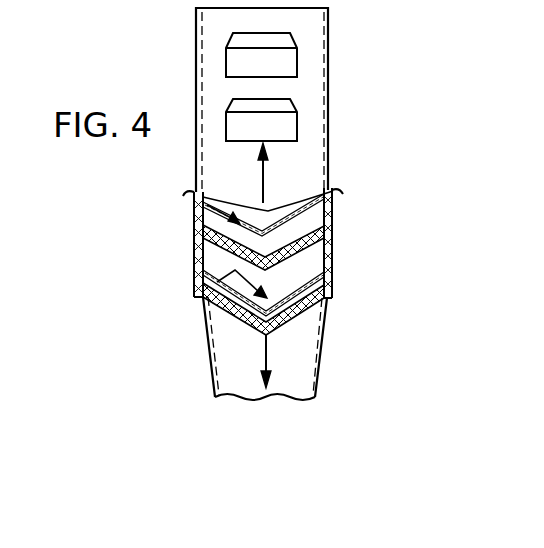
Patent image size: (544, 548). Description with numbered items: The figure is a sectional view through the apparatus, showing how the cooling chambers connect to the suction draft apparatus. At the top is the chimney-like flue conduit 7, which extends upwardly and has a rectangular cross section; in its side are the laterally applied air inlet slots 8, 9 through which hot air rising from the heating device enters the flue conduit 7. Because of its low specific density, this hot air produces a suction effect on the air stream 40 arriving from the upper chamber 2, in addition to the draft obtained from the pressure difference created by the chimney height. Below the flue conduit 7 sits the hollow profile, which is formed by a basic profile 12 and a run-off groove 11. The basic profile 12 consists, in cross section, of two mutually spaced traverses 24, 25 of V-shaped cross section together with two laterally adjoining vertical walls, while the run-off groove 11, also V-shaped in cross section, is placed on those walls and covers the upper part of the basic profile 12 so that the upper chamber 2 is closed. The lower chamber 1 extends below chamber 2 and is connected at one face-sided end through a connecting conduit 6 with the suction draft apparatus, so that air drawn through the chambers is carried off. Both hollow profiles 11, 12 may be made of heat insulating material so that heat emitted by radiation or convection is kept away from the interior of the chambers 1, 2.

The chamber 1 is at (305, 273).
The chamber 2 is at (335, 191).
The connecting conduit 6 is at (293, 358).
The flue conduit 7 is at (312, 88).
The air inlet slot 8 is at (260, 55).
The air inlet slot 9 is at (275, 130).
The run-off groove 11 is at (194, 208).
The basic profile 12 is at (193, 260).
The traverse 24 is at (303, 225).
The traverse 25 is at (332, 287).
The air stream 40 is at (270, 190).